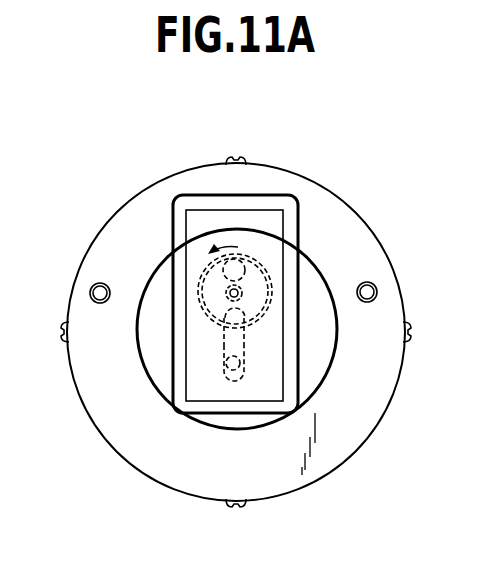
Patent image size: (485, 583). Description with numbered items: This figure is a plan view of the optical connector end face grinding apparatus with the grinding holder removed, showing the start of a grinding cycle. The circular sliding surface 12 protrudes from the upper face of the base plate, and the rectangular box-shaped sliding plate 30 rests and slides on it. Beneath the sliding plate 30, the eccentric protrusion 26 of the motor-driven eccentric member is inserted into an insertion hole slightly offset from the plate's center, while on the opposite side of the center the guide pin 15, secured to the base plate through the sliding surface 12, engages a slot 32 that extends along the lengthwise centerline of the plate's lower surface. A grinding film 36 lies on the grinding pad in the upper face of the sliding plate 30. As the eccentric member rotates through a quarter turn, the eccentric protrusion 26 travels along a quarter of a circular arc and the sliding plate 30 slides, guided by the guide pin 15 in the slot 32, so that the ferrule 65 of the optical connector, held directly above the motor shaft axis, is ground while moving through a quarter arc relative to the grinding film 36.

The sliding surface 12 is at (330, 340).
The guide pin 15 is at (226, 371).
The eccentric protrusion 26 is at (223, 342).
The sliding plate 30 is at (262, 192).
The slot 32 is at (216, 264).
The grinding film 36 is at (210, 220).
The ferrule 65 is at (243, 291).